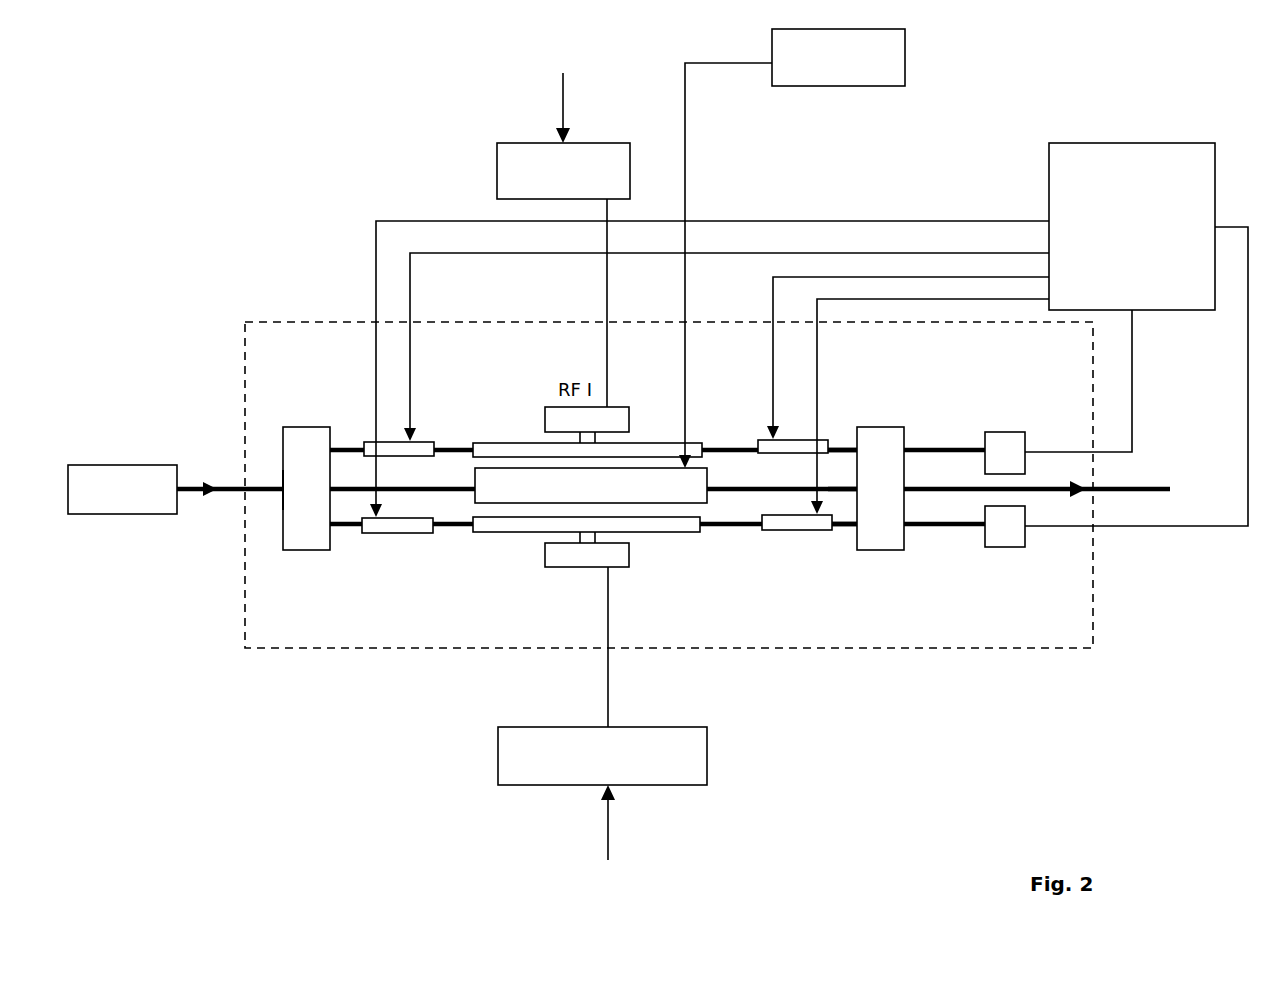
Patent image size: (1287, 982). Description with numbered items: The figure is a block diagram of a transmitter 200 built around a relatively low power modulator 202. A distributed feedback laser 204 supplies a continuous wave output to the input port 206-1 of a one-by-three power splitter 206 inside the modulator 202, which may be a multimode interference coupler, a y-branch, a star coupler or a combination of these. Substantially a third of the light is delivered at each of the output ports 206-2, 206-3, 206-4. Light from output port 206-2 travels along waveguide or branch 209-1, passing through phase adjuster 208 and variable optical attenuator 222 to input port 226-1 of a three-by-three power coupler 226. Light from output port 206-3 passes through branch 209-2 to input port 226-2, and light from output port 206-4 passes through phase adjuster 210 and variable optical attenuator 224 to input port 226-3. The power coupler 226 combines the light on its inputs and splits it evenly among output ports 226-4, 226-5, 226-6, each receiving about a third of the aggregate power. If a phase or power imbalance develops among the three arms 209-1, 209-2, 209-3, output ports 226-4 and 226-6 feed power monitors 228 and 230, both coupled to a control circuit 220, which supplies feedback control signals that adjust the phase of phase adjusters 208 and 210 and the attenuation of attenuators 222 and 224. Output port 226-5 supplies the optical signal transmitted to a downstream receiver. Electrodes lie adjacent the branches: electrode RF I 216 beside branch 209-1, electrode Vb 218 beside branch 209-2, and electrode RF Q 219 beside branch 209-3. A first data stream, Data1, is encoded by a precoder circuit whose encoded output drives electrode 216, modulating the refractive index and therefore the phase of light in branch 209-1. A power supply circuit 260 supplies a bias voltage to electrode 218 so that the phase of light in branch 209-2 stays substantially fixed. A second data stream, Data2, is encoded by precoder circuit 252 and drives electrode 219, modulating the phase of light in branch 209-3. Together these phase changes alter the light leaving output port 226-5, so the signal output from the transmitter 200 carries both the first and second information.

The transmitter 200 is at (106, 150).
The modulator 202 is at (1093, 595).
The distributed feedback (DFB) laser 204 is at (145, 514).
The 1x3 power splitter 206 is at (283, 428).
The input port 206-1 is at (279, 493).
The output port 206-2 is at (345, 443).
The output port 206-3 is at (325, 507).
The output port 206-4 is at (333, 530).
The phase adjuster 208 is at (420, 436).
The waveguide or branch 209-1 is at (455, 443).
The waveguide or branch 209-2 is at (450, 490).
The waveguide or branch 209-3 is at (712, 532).
The phase adjuster 210 is at (432, 536).
The electrode RF I 216 is at (640, 445).
The electrode Vb 218 is at (708, 533).
The electrode RF Q 219 is at (643, 533).
The control circuit 220 is at (809, 334).
The variable optical attenuator (VOA) 222 is at (818, 528).
The variable optical attenuator (VOA) 224 is at (826, 438).
The 3x3 power coupler 226 is at (882, 426).
The input port 226-1 is at (837, 443).
The input port 226-2 is at (838, 490).
The input port 226-3 is at (847, 525).
The output port 226-4 is at (905, 442).
The output port 226-5 is at (905, 490).
The output port 226-6 is at (905, 525).
The power monitor 228 is at (994, 431).
The power monitor 230 is at (993, 548).
The precoder circuit 252 is at (497, 155).
The power supply circuit 260 is at (840, 86).